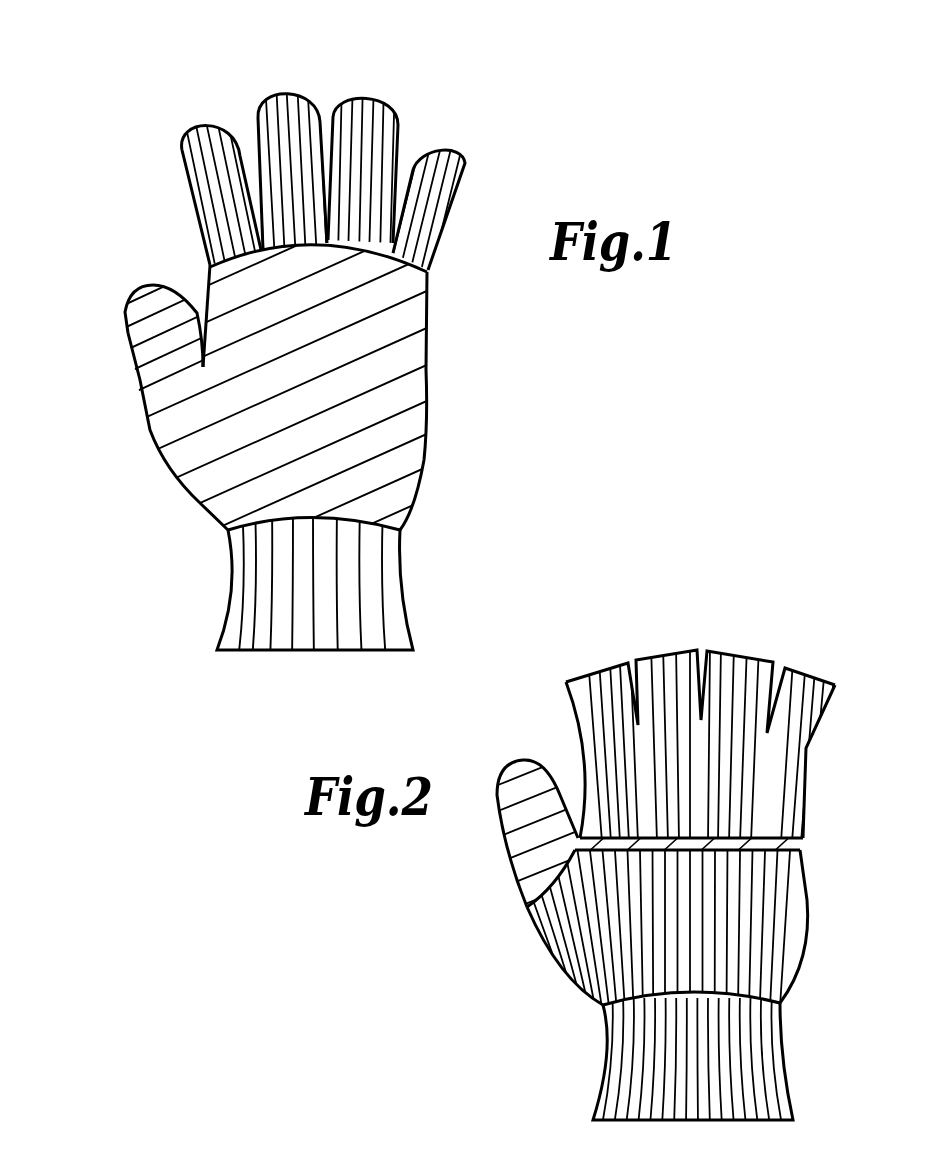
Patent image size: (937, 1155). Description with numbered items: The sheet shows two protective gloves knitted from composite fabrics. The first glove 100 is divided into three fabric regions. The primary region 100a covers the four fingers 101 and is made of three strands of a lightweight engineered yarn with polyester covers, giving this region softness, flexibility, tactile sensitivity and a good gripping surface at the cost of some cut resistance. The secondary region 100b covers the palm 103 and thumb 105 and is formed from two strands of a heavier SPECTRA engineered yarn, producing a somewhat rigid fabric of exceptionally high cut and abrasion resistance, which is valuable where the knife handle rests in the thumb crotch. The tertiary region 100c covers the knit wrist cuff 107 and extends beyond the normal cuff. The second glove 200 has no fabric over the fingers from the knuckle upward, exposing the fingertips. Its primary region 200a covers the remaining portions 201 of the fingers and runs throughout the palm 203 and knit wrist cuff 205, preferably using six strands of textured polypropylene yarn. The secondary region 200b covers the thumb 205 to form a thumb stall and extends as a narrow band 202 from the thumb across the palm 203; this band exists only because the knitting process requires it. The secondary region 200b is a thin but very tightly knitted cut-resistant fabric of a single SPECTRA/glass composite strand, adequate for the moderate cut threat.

In FIG. 1, the glove 100 is at (146, 444).
In FIG. 1, the fingers 101 is at (455, 150).
In FIG. 1, the primary region 100a is at (287, 185).
In FIG. 1, the palm 103 is at (427, 370).
In FIG. 1, the secondary region 100b is at (337, 453).
In FIG. 1, the thumb 105 is at (126, 330).
In FIG. 1, the knit wrist cuff 107 is at (228, 587).
In FIG. 1, the tertiary region 100c is at (343, 602).
In FIG. 2, the glove 200 is at (558, 981).
In FIG. 2, the remaining portions of the fingers 201 is at (810, 675).
In FIG. 2, the primary region 200a is at (693, 772).
In FIG. 2, the narrow band 202 is at (753, 837).
In FIG. 2, the palm 203 is at (807, 913).
In FIG. 2, the secondary region 200b is at (528, 823).
In FIG. 2, the thumb / knit wrist cuff 205 is at (545, 760).